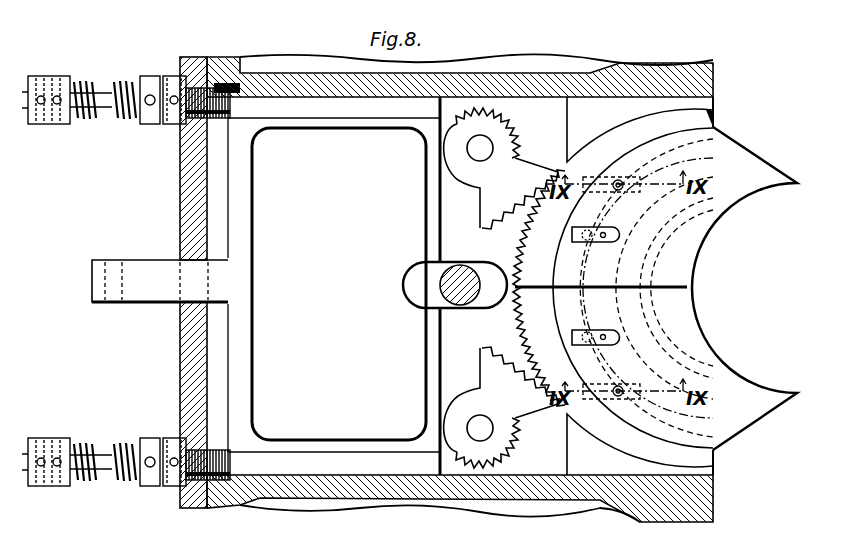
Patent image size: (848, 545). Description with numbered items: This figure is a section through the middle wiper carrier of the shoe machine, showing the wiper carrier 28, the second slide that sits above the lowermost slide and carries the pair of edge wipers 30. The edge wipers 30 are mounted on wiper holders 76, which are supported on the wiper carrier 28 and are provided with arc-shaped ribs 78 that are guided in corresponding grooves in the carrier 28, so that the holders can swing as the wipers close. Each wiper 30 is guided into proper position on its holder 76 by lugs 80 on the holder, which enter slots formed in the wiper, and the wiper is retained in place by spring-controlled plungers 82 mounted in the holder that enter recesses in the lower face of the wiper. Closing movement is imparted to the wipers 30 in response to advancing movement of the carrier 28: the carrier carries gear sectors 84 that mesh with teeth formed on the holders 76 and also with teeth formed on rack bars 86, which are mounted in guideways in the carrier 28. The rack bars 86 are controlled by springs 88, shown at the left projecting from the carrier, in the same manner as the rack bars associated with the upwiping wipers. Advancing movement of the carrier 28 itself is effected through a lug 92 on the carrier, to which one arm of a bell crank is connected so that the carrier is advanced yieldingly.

The wiper carrier 28 is at (440, 337).
The edge wipers 30 is at (687, 274).
The wiper holders 76 is at (612, 130).
The arc-shaped ribs 78 is at (622, 347).
The lugs 80 is at (623, 235).
The spring-controlled plungers 82 is at (632, 193).
The gear sectors 84 is at (486, 187).
The rack bars 86 is at (348, 107).
The springs 88 is at (92, 122).
The lug 92 is at (142, 264).